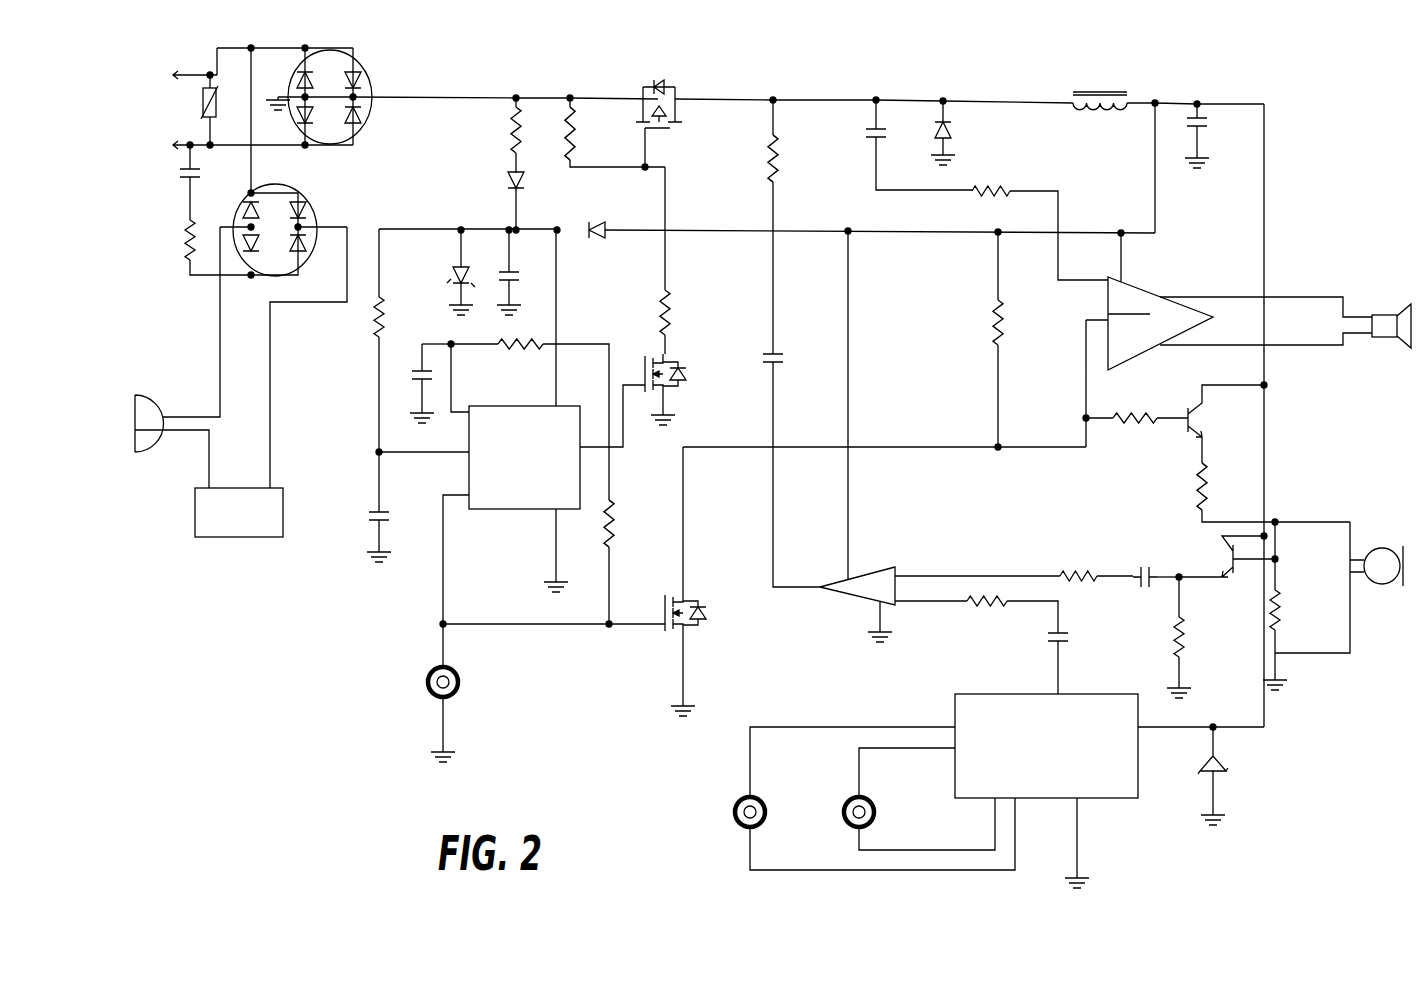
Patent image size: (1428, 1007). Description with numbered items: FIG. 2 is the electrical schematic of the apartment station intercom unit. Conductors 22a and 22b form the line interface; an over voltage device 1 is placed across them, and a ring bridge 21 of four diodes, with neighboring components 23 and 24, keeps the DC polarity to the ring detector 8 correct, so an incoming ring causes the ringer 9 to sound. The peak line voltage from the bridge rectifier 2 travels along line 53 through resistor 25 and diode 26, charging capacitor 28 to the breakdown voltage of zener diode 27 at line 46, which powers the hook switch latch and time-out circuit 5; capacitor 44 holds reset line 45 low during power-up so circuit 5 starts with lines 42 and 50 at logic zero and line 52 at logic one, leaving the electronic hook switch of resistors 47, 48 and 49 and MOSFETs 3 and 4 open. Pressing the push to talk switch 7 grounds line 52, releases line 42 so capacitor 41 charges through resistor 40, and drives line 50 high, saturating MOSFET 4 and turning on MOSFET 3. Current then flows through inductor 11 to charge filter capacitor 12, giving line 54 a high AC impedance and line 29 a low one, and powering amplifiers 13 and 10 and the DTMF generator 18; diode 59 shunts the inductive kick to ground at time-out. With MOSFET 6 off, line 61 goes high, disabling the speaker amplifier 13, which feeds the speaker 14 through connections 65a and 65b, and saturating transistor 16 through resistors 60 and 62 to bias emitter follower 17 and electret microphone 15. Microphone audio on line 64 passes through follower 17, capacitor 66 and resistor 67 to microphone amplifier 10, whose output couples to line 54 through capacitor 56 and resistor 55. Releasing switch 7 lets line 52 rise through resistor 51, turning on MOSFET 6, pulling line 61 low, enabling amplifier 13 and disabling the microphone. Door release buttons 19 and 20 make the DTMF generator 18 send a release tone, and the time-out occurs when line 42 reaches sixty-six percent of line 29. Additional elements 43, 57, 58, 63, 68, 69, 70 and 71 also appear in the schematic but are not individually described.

The over voltage device 1 is at (203, 97).
The bridge rectifier 2 is at (327, 152).
The P-channel MOSFET 3 is at (683, 108).
The N-channel MOSFET 4 is at (641, 343).
The hook switch latch and time-out circuit 5 is at (466, 473).
The MOSFET 6 is at (657, 635).
The push to talk switch 7 is at (416, 658).
The ring detector 8 is at (193, 505).
The ringer 9 is at (128, 418).
The microphone amplifier 10 is at (862, 603).
The inductor 11 is at (1075, 92).
The filter capacitor 12 is at (1200, 126).
The speaker amplifier 13 is at (1106, 302).
The speaker 14 is at (1395, 304).
The electret microphone 15 is at (1392, 547).
The NPN transistor 16 is at (1196, 405).
The emitter follower 17 is at (1218, 546).
The DTMF generator 18 is at (986, 694).
The door release button 19 is at (852, 795).
The door release button 20 is at (743, 795).
The ring bridge 21 is at (320, 197).
The conductor 22a is at (170, 70).
The conductor 22b is at (160, 135).
The capacitor 23 is at (183, 176).
The resistor 24 is at (188, 250).
The resistor 25 is at (510, 140).
The diode 26 is at (510, 179).
The zener diode 27 is at (459, 271).
The filter capacitor 28 is at (502, 272).
The line 29 is at (1152, 162).
The resistor 40 is at (372, 315).
The capacitor 41 is at (370, 513).
The line 42 is at (376, 450).
The resistor 43 is at (505, 346).
The capacitor 44 is at (426, 371).
The reset line 45 is at (437, 343).
The line 46 is at (460, 228).
The resistor 47 is at (580, 130).
The resistor 48 is at (667, 190).
The resistor 49 is at (664, 298).
The line 50 is at (624, 418).
The resistor 51 is at (606, 522).
The line 52 is at (607, 606).
The line 53 is at (543, 96).
The line 54 is at (755, 97).
The resistor 55 is at (766, 160).
The capacitor 56 is at (768, 355).
The capacitor 57 is at (870, 128).
The resistor 58 is at (996, 188).
The diode 59 is at (940, 139).
The resistor 60 is at (996, 318).
The line 61 is at (928, 446).
The resistor 62 is at (1141, 426).
The resistor 63 is at (1200, 475).
The line 64 is at (1338, 520).
The output line 65a is at (1320, 295).
The output line 65b is at (1325, 343).
The capacitor 66 is at (1141, 563).
The resistor 67 is at (1080, 572).
The resistor 68 is at (1178, 620).
The resistor 69 is at (985, 608).
The capacitor 70 is at (1042, 637).
The zener diode 71 is at (1202, 765).